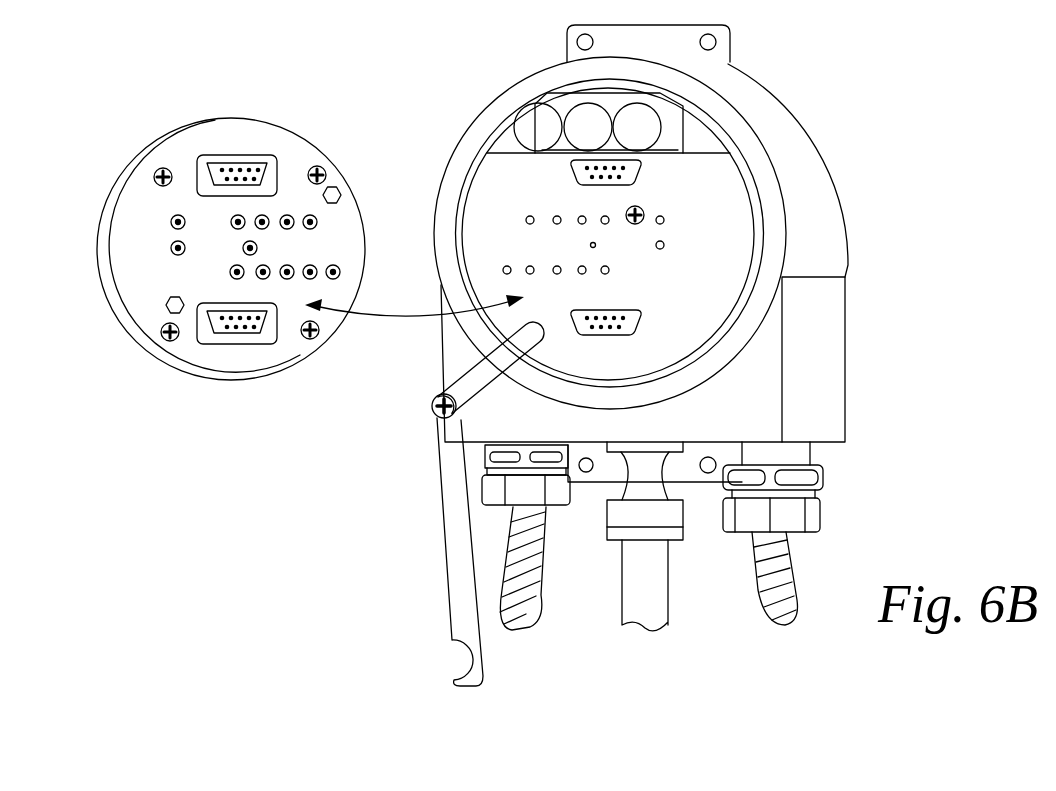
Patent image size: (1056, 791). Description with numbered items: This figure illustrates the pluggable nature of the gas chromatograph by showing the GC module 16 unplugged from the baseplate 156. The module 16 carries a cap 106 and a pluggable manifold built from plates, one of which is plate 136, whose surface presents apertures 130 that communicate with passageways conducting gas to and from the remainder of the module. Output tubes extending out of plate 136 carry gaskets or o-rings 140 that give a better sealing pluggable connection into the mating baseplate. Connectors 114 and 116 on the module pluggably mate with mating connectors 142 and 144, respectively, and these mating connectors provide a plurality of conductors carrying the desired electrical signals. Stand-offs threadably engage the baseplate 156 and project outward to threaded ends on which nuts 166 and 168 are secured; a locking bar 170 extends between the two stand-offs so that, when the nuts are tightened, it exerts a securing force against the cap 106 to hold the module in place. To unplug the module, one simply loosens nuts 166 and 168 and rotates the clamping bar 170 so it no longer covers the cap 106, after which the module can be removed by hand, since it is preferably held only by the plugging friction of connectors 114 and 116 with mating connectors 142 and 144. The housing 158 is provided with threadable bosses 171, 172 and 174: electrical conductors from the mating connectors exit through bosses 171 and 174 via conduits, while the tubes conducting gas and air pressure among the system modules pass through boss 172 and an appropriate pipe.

The GC module 16 is at (221, 226).
The cap 106 is at (150, 146).
The plate 136 is at (120, 245).
The connector 116 is at (250, 165).
The connector 114 is at (258, 328).
The o-rings 140 is at (335, 270).
The mating connector 144 is at (641, 175).
The mating connector 142 is at (641, 321).
The apertures 130 is at (605, 216).
The nut 168 is at (645, 223).
The baseplate 156 is at (760, 232).
The housing 158 is at (849, 367).
The nut 166 is at (431, 402).
The locking bar 170 is at (458, 593).
The threadable boss 171 is at (553, 510).
The threadable boss 172 is at (678, 542).
The threadable boss 174 is at (818, 512).